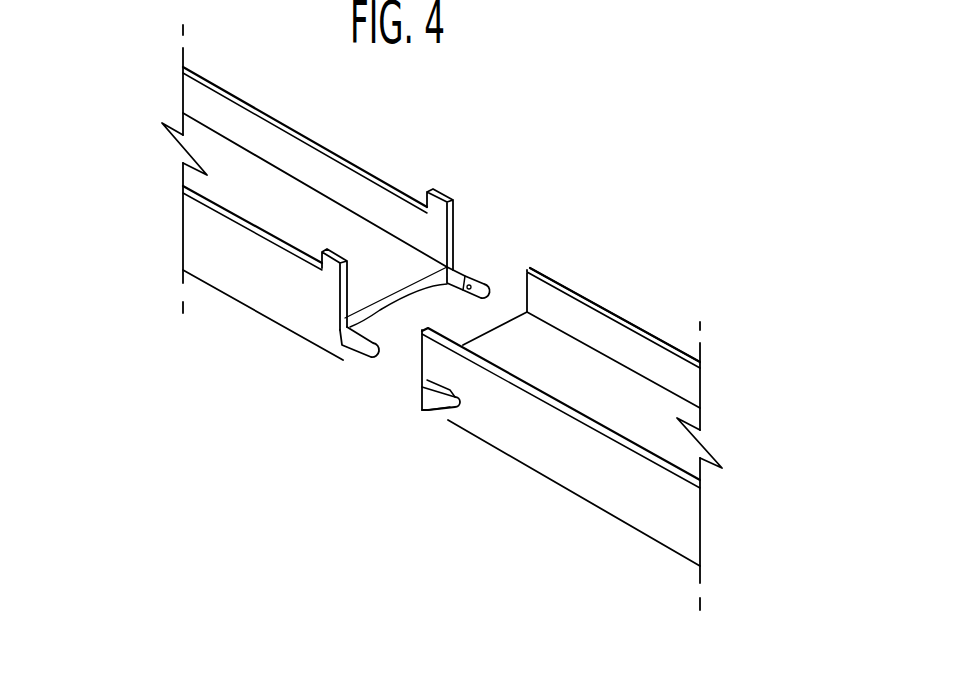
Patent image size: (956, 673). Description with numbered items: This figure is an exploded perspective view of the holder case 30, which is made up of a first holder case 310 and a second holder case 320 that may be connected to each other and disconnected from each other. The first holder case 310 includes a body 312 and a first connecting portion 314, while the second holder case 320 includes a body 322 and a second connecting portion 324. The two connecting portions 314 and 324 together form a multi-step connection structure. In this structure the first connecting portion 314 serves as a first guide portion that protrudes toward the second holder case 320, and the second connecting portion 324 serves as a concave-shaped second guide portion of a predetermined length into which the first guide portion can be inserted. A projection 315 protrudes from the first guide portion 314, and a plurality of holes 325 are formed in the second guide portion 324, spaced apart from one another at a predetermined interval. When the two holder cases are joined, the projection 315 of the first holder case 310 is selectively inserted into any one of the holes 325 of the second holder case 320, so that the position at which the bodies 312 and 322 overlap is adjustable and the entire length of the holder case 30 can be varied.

The holder case 30 is at (532, 160).
The first holder case 310 is at (352, 158).
The body 312 is at (262, 283).
The first connecting portion 314 is at (342, 356).
The projection 315 is at (466, 271).
The second holder case 320 is at (600, 298).
The body 322 is at (605, 488).
The second connecting portion 324 is at (440, 398).
The holes 325 is at (431, 407).